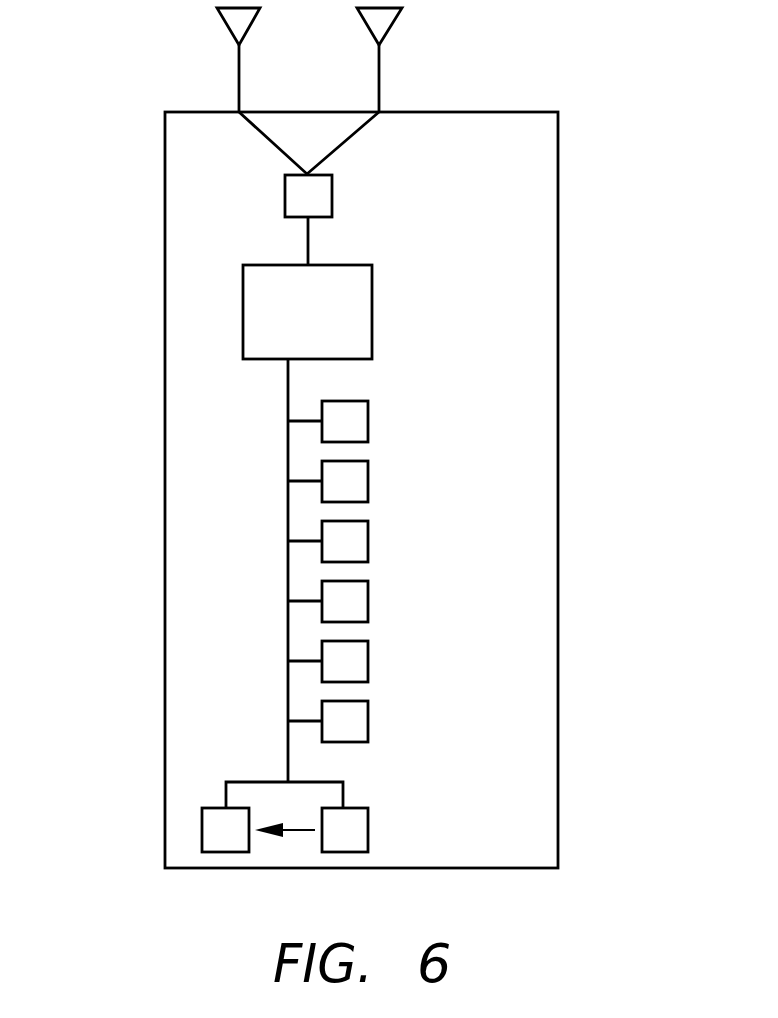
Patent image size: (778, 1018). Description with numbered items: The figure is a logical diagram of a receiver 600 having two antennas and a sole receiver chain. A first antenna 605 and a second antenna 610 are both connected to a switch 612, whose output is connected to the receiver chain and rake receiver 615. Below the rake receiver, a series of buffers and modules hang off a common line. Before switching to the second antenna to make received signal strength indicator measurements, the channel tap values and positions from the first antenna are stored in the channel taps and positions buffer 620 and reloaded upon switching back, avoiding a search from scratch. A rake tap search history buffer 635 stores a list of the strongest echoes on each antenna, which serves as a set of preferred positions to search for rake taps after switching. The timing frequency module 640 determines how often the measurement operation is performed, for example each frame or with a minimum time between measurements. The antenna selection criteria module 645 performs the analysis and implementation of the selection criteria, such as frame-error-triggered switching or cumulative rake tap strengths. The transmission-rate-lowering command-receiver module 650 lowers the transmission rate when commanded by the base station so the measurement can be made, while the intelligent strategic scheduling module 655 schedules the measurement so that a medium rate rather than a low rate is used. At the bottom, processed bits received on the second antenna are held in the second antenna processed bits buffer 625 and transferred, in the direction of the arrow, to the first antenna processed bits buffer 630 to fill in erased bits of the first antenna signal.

The receiver 600 is at (132, 209).
The first antenna 605 is at (228, 32).
The second antenna 610 is at (398, 20).
The switch 612 is at (333, 197).
The receiver chain and rake receiver 615 is at (373, 308).
The channel taps and positions buffer 620 is at (369, 420).
The second antenna processed bits buffer 625 is at (343, 852).
The first antenna processed bits buffer 630 is at (226, 852).
The rake tap search history buffer 635 is at (369, 480).
The timing frequency module 640 is at (369, 540).
The antenna selection criteria module 645 is at (369, 600).
The transmission-rate-lowering command-receiver module 650 is at (369, 660).
The intelligent strategic scheduling module 655 is at (369, 720).